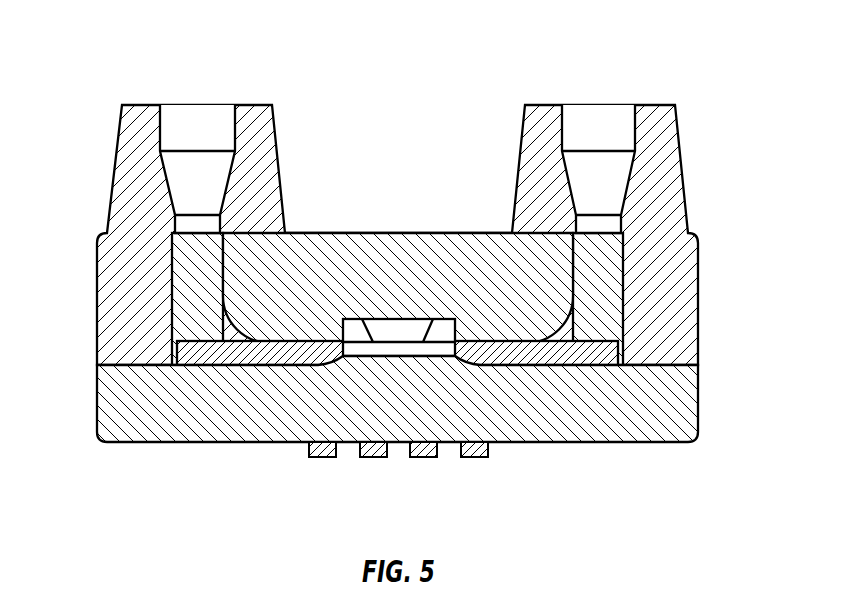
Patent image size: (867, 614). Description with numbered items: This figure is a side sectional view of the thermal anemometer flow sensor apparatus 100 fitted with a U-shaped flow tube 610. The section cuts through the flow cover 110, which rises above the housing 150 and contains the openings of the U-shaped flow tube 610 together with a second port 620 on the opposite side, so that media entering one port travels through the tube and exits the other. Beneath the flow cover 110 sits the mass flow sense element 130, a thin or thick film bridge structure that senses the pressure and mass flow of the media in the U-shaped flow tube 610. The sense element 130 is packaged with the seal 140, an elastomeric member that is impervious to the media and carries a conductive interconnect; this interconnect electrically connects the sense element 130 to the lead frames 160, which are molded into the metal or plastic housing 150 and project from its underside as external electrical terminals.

The thermal anemometer flow sensor apparatus 100 is at (406, 249).
The flow cover 110 is at (672, 172).
The mass flow sense element 130 is at (383, 327).
The seal 140 is at (390, 347).
The housing 150 is at (688, 403).
The lead frames 160 is at (477, 454).
The U-shaped flow tube 610 is at (184, 113).
The second cavity / opening 620 is at (614, 104).